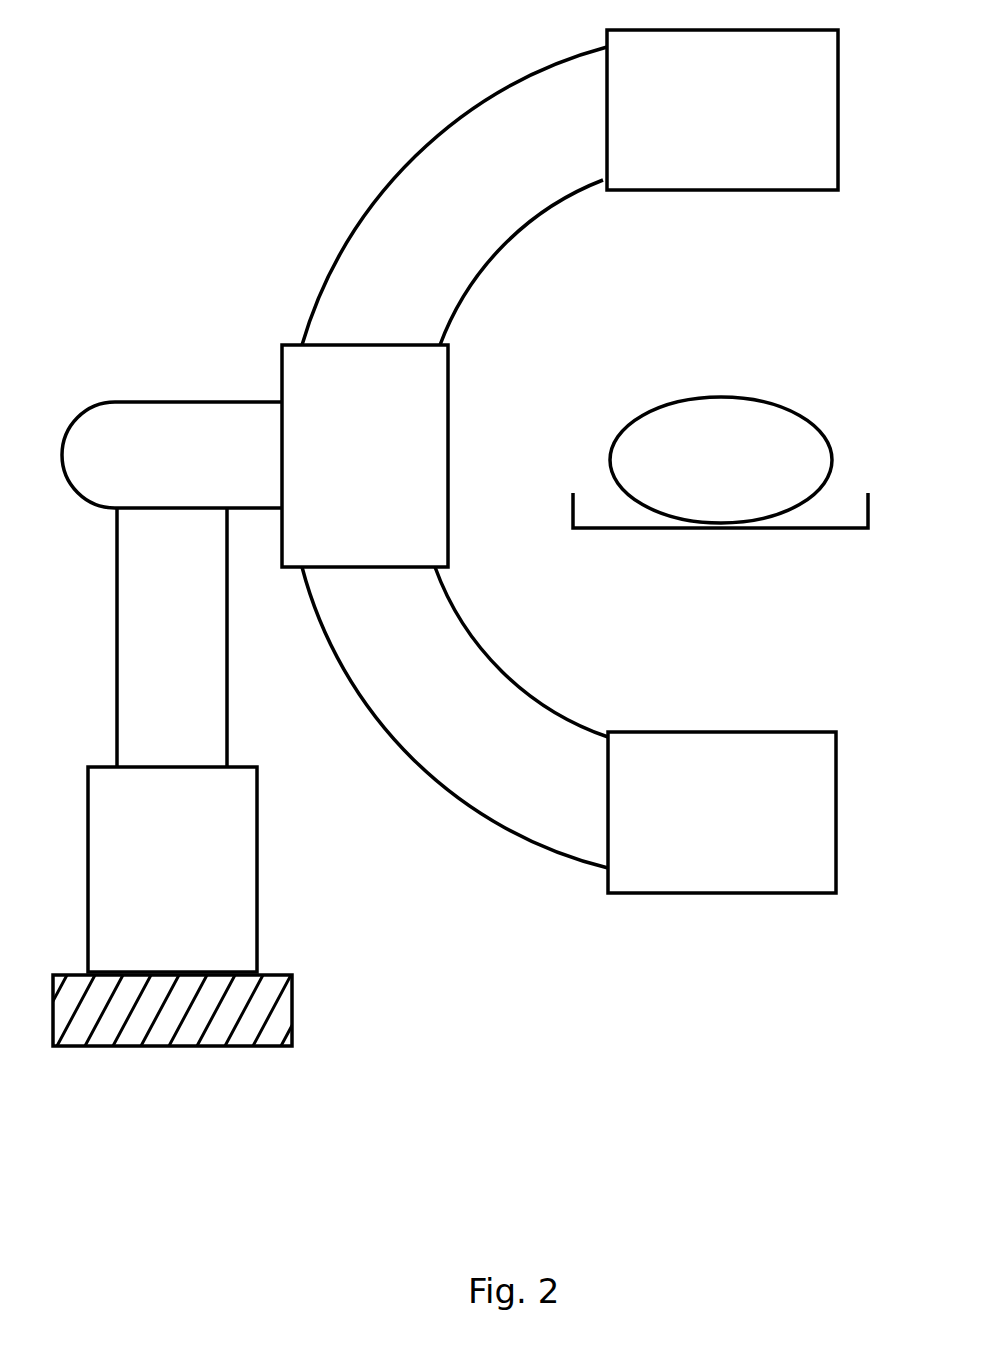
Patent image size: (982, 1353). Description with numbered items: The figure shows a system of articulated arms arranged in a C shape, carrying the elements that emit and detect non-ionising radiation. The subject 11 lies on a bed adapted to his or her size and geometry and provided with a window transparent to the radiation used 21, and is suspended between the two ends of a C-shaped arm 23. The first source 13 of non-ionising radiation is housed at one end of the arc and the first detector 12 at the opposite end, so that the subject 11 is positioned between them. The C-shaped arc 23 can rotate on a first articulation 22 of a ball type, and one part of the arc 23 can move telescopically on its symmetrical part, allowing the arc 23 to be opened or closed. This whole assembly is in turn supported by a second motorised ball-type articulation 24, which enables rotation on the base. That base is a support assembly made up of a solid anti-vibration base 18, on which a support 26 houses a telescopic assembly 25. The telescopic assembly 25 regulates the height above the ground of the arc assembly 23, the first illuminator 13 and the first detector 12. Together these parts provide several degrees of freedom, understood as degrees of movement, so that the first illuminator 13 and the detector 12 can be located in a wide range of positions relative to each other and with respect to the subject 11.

The subject 11 is at (721, 460).
The first detector 12 is at (722, 812).
The first source 13 is at (722, 110).
The solid anti-vibration base 18 is at (300, 1015).
The window transparent to the radiation used 21 is at (827, 543).
The first articulation 22 is at (365, 456).
The C-shaped arm 23 is at (455, 457).
The second motorised ball-type articulation 24 is at (172, 455).
The telescopic assembly 25 is at (172, 637).
The support 26 is at (172, 869).